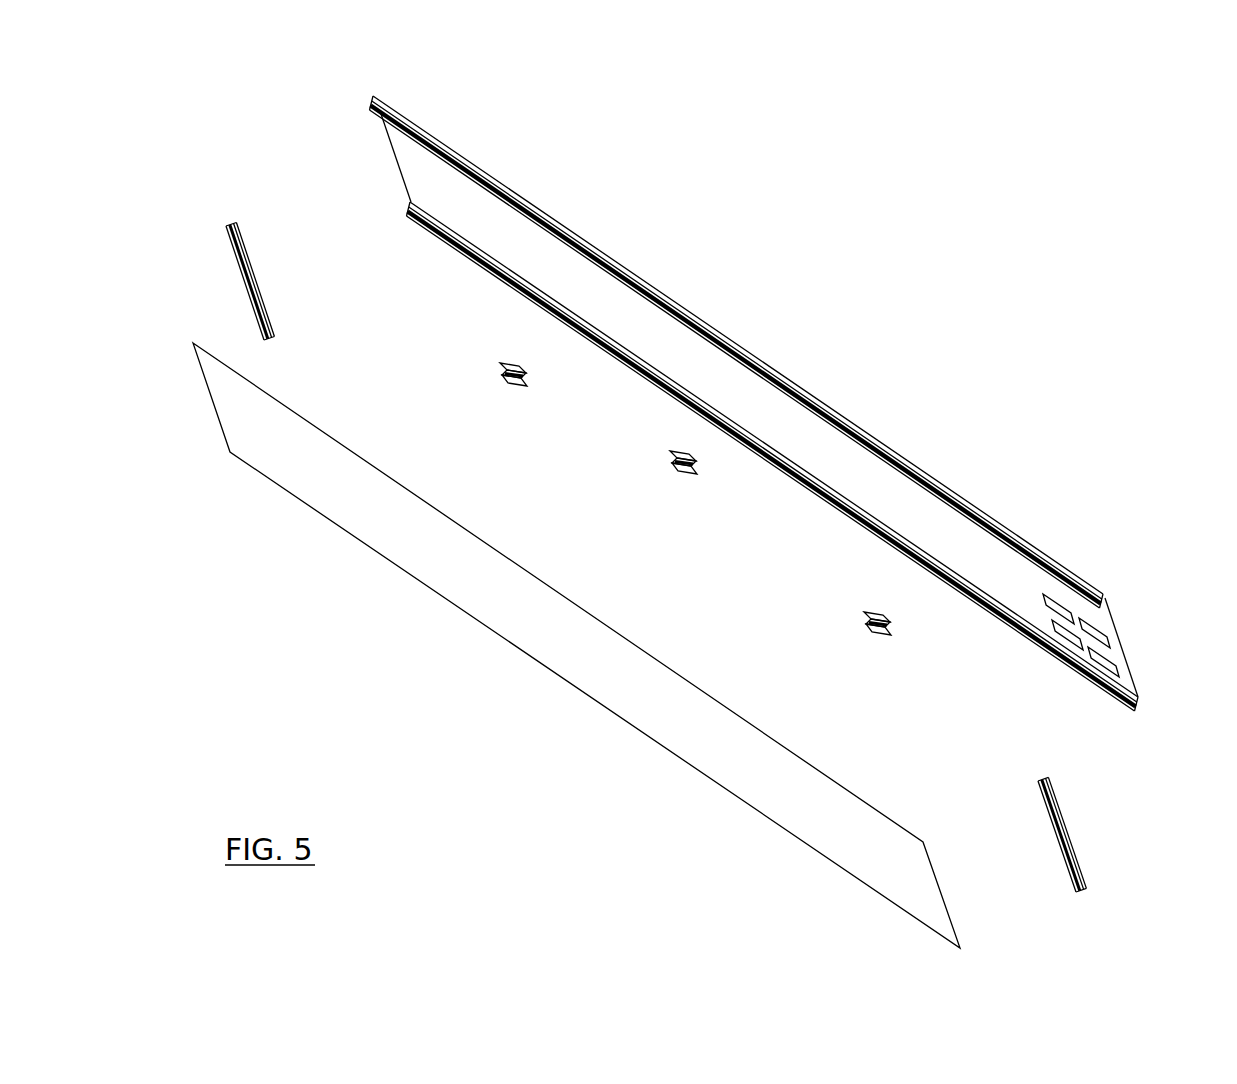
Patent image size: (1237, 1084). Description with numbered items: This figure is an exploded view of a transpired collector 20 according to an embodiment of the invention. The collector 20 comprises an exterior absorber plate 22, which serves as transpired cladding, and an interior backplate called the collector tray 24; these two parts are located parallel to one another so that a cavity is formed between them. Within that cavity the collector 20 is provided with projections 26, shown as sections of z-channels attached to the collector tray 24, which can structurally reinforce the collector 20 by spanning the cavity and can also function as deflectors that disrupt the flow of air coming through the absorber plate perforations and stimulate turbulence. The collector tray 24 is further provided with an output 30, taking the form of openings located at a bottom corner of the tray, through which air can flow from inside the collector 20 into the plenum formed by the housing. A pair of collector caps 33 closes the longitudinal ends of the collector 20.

The transpired collector 20 is at (733, 178).
The exterior absorber plate 22 is at (254, 440).
The collector tray 24 is at (987, 573).
The projections 26 is at (510, 388).
The output 30 is at (1093, 635).
The collector caps 33 is at (228, 221).